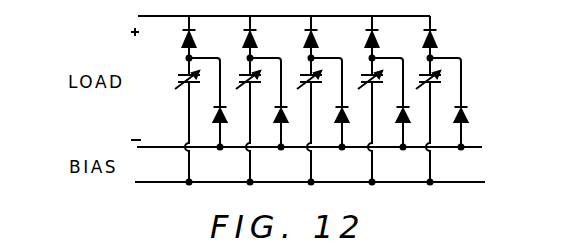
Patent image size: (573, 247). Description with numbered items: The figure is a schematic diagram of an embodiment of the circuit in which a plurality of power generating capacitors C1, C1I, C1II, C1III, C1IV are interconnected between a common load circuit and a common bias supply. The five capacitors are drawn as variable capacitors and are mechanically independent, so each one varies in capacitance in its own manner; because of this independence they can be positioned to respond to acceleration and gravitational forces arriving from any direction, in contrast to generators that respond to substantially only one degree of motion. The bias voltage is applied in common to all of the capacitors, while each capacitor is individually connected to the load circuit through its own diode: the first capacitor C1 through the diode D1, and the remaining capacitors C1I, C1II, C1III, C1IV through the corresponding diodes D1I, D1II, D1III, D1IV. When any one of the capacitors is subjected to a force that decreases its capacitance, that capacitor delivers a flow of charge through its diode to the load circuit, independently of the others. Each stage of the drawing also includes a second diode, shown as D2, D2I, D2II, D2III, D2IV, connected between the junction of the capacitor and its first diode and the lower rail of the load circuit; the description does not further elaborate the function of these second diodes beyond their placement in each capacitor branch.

The diode D1 is at (179, 37).
The diode D1I is at (240, 37).
The diode D1II is at (301, 37).
The diode D1III is at (362, 37).
The diode D1IV is at (420, 37).
The power generating capacitor C1 is at (176, 74).
The power generating capacitor C1I is at (237, 74).
The power generating capacitor C1II is at (298, 74).
The power generating capacitor C1III is at (359, 74).
The power generating capacitor C1IV is at (417, 74).
The second diode, first stage D2 is at (208, 104).
The second diode, second stage D2I is at (269, 104).
The second diode, third stage D2II is at (330, 104).
The second diode, fourth stage D2III is at (391, 104).
The second diode, fifth stage D2IV is at (449, 104).